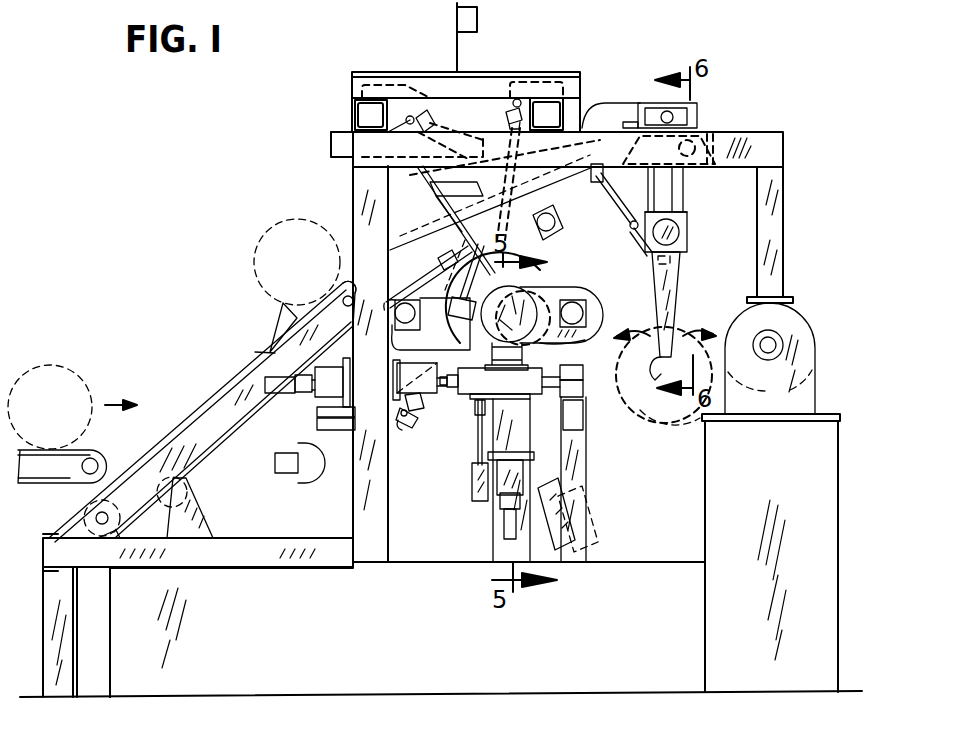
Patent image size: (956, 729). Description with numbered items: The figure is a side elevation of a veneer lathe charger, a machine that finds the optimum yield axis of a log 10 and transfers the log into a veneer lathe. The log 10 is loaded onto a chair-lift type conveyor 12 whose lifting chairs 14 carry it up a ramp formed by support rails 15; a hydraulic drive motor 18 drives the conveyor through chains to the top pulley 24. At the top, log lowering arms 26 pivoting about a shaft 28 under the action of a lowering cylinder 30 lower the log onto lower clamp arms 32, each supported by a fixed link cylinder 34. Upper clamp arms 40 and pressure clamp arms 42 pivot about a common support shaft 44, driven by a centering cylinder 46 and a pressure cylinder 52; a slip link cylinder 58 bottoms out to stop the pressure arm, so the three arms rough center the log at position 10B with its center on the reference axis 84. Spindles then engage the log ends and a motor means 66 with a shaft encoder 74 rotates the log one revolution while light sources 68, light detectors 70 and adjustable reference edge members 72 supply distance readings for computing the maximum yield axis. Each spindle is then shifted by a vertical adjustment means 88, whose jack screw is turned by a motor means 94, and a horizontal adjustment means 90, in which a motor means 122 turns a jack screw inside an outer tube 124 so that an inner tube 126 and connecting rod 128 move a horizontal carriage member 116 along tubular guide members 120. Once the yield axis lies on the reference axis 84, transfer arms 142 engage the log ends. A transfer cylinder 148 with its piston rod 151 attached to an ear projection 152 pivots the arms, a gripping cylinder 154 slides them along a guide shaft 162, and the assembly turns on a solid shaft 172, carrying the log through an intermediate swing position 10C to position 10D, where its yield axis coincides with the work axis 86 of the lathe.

The log 10 is at (58, 365).
The rough centered position of the log 10B is at (542, 282).
The roll in release position 10C is at (662, 414).
The transfer position of the log 10D is at (810, 398).
The chair-lift type conveyor 12 is at (205, 333).
The lifting chairs 14 is at (272, 330).
The support rails 15 is at (128, 471).
The hydraulic drive motor 18 is at (292, 483).
The top pulley 24 is at (347, 284).
The log lowering arms 26 is at (468, 294).
The shaft 28 is at (397, 325).
The lowering cylinder 30 is at (408, 423).
The lower clamp arms 32 is at (518, 353).
The fixed link cylinder 34 is at (438, 200).
The upper clamp arms 40 is at (556, 249).
The pressure clamp arms 42 is at (440, 196).
The common support shaft 44 is at (560, 227).
The centering cylinder 46 is at (517, 128).
The pressure cylinder 52 is at (670, 181).
The slip link cylinder 58 is at (450, 256).
The motor means 66 is at (612, 312).
The light sources 68 is at (330, 142).
The light detectors 70 is at (547, 520).
The adjustable reference edge members 72 is at (400, 300).
The shaft encoder 74 is at (598, 333).
The reference axis 84 is at (587, 286).
The work axis 86 is at (742, 360).
The vertical adjustment means 88 is at (530, 415).
The horizontal adjustment means 90 is at (395, 378).
The motor means 94 is at (498, 522).
The horizontal carriage member 116 is at (479, 410).
The tubular guide members 120 is at (584, 388).
The motor means 122 is at (285, 395).
The outer tube 124 is at (270, 358).
The inner tube 126 is at (410, 414).
The connecting rod 128 is at (428, 396).
The transfer arms 142 is at (680, 290).
The transfer cylinder 148 is at (447, 122).
The piston rod 151 is at (603, 194).
The ear projection 152 is at (643, 240).
The gripping cylinder 154 is at (688, 258).
The guide shaft 162 is at (690, 235).
The solid shaft 172 is at (667, 115).